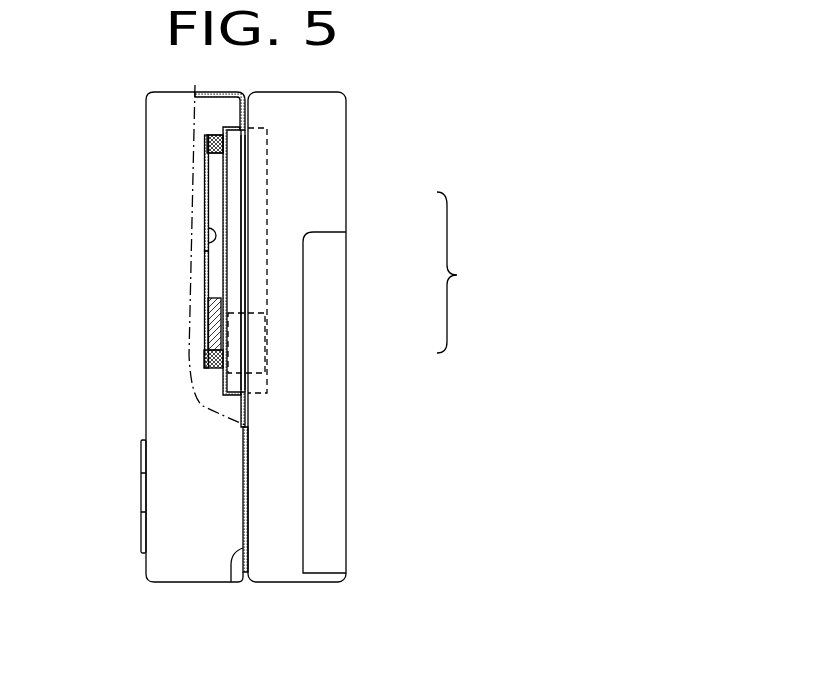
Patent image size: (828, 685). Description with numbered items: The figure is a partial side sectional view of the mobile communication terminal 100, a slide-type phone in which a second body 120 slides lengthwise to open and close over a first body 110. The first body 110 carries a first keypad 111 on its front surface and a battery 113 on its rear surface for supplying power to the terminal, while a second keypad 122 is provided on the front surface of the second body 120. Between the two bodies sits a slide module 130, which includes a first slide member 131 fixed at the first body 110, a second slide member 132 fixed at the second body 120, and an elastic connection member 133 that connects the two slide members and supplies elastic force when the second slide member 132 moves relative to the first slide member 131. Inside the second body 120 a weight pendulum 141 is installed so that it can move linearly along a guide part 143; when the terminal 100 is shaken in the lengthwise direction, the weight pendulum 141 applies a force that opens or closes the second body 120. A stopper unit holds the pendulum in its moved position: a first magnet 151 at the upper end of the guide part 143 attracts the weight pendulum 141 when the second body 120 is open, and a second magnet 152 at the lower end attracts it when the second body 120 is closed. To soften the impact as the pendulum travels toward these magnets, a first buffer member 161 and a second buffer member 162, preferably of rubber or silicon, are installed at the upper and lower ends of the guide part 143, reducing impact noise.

The mobile communication terminal 100 is at (386, 137).
The first body 110 is at (287, 563).
The first keypad 111 is at (229, 582).
The battery 113 is at (337, 455).
The second body 120 is at (192, 563).
The second keypad 122 is at (140, 494).
The slide module 130 is at (466, 272).
The first slide member 131 is at (265, 215).
The second slide member 132 is at (240, 262).
The elastic connection member 133 is at (262, 335).
The weight pendulum 141 is at (208, 320).
The guide part 143 is at (208, 243).
The first magnet 151 is at (209, 141).
The second magnet 152 is at (207, 363).
The first buffer member 161 is at (208, 154).
The second buffer member 162 is at (207, 352).